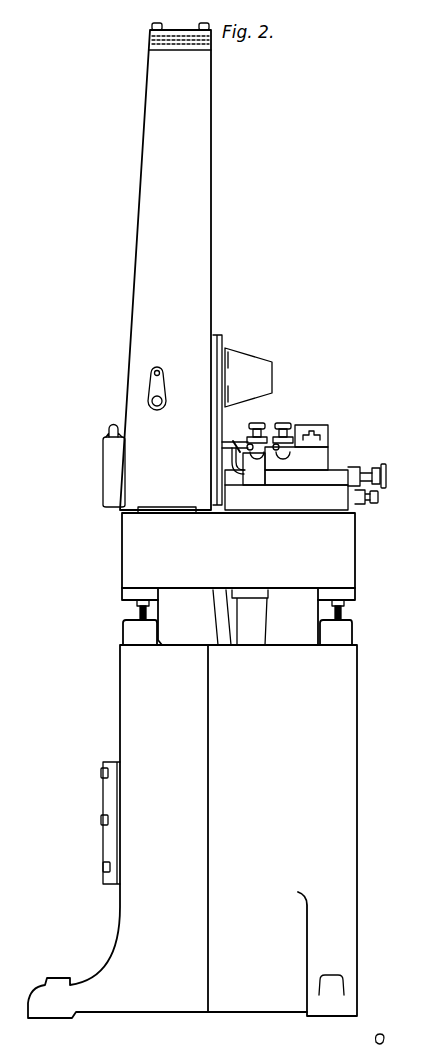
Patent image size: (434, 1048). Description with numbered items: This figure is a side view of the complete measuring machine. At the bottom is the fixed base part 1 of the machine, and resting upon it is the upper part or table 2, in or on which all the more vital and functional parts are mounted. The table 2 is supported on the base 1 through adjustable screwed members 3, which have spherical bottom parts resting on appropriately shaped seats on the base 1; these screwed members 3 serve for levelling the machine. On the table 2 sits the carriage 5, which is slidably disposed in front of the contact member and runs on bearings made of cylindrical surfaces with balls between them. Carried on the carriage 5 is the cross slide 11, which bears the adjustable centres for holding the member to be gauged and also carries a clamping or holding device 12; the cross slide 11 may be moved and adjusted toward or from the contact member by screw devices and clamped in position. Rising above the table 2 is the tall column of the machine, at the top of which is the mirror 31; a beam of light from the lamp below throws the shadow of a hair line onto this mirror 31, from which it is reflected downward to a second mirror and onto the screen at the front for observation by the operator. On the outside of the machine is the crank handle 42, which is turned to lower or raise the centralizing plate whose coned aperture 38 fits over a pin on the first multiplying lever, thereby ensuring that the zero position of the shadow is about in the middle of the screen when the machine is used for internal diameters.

The fixed base part 1 is at (192, 819).
The table 2 is at (238, 579).
The adjustable screwed members 3 is at (346, 606).
The carriage 5 is at (286, 490).
The cross slide 11 is at (326, 478).
The clamping or holding device 12 is at (315, 461).
The mirror 31 is at (200, 47).
The coned aperture 38 is at (377, 498).
The crank handle 42 is at (152, 384).